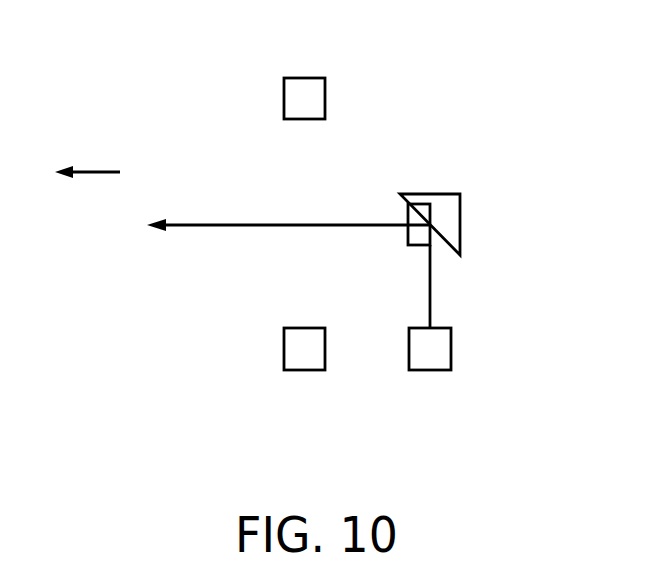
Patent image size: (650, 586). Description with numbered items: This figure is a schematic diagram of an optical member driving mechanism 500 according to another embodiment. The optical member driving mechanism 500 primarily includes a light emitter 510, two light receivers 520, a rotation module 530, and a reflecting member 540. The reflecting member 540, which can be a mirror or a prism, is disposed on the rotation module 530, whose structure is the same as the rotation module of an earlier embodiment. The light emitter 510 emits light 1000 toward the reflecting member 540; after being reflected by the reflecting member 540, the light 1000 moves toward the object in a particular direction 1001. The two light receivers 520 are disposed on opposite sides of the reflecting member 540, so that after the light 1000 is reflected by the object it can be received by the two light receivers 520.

The optical member driving mechanism 500 is at (78, 33).
The light emitter 510 is at (451, 349).
The light receivers 520 is at (305, 77).
The rotation module 530 is at (441, 193).
The reflecting member 540 is at (438, 246).
The light 1000 is at (236, 222).
The particular direction 1001 is at (88, 170).